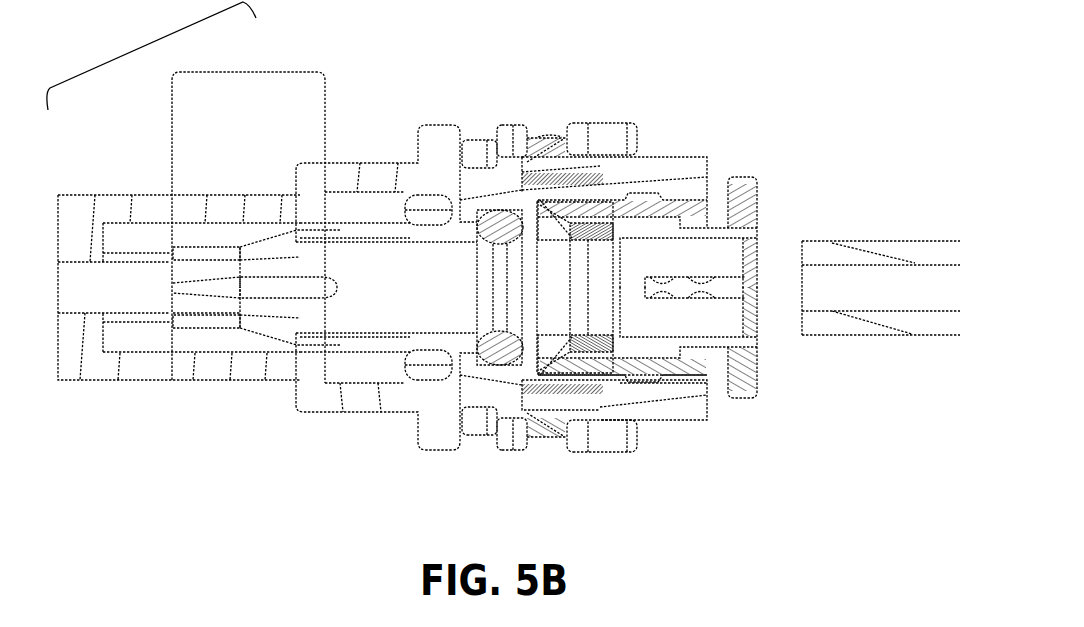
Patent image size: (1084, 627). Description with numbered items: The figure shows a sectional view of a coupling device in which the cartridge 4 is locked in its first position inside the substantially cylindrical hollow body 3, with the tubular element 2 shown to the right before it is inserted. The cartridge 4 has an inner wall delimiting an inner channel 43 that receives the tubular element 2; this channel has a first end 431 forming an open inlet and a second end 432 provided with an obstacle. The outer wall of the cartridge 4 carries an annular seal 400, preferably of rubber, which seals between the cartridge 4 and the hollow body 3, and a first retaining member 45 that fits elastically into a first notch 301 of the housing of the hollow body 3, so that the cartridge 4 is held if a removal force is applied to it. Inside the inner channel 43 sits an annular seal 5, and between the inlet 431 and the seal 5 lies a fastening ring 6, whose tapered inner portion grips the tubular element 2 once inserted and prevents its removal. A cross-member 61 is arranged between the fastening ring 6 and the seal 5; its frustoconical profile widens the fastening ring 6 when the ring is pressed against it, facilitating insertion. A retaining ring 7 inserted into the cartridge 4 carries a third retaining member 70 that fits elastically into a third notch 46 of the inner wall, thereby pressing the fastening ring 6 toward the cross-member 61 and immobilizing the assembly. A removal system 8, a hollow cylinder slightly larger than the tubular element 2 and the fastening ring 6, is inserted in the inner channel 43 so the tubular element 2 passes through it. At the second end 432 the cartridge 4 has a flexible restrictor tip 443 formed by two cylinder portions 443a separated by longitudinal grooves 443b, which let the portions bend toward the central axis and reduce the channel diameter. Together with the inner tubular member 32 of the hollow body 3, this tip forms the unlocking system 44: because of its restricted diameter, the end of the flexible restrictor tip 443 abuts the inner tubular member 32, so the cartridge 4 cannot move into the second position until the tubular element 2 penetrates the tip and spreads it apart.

The unlocking system 44 is at (143, 42).
The flexible restrictor tip 443 is at (248, 212).
The cylinder portions 443a is at (230, 247).
The longitudinal grooves 443b is at (295, 287).
The inner tubular member 32 is at (123, 257).
The second end 432 is at (242, 308).
The inner channel 43 is at (377, 302).
The annular seal 400 is at (432, 210).
The annular seal 5 is at (497, 345).
The cross-member 61 is at (556, 348).
The hollow body 3 is at (623, 127).
The first retaining member 45 is at (575, 128).
The first notch 301 is at (550, 134).
The cartridge 4 is at (658, 172).
The retaining ring 7 is at (688, 210).
The removal system 8 is at (757, 207).
The fastening ring 6 is at (596, 338).
The first end 431 is at (712, 367).
The third notch 46 is at (651, 384).
The third retaining member 70 is at (655, 372).
The tubular element 2 is at (895, 250).